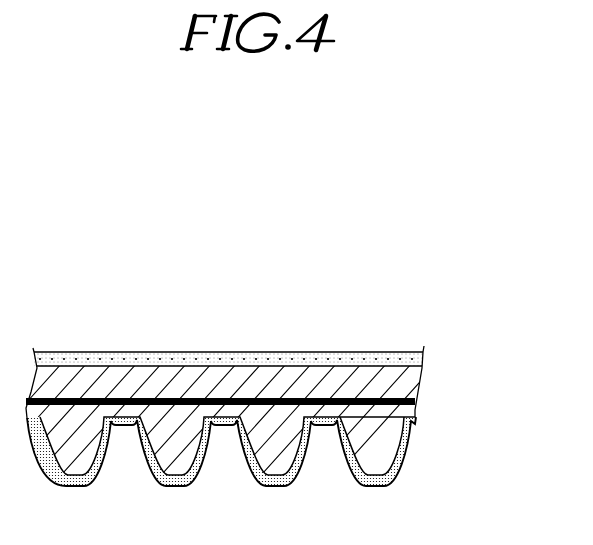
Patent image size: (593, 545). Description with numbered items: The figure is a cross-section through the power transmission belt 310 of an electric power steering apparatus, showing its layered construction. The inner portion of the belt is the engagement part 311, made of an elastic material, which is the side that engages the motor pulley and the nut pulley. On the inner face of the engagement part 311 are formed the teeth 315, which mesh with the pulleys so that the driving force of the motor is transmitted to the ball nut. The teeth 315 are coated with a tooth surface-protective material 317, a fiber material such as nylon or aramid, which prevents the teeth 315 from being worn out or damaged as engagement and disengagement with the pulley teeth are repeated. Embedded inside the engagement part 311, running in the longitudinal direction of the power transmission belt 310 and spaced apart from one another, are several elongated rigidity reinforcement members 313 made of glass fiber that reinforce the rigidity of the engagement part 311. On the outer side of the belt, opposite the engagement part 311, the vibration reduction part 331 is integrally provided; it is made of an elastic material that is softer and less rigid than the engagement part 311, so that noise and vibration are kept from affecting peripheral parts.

The power transmission belt 310 is at (249, 367).
The engagement part 311 is at (418, 388).
The rigidity reinforcement member 313 is at (415, 403).
The teeth 315 is at (372, 446).
The tooth surface-protective material 317 is at (418, 423).
The vibration reduction part 331 is at (423, 362).